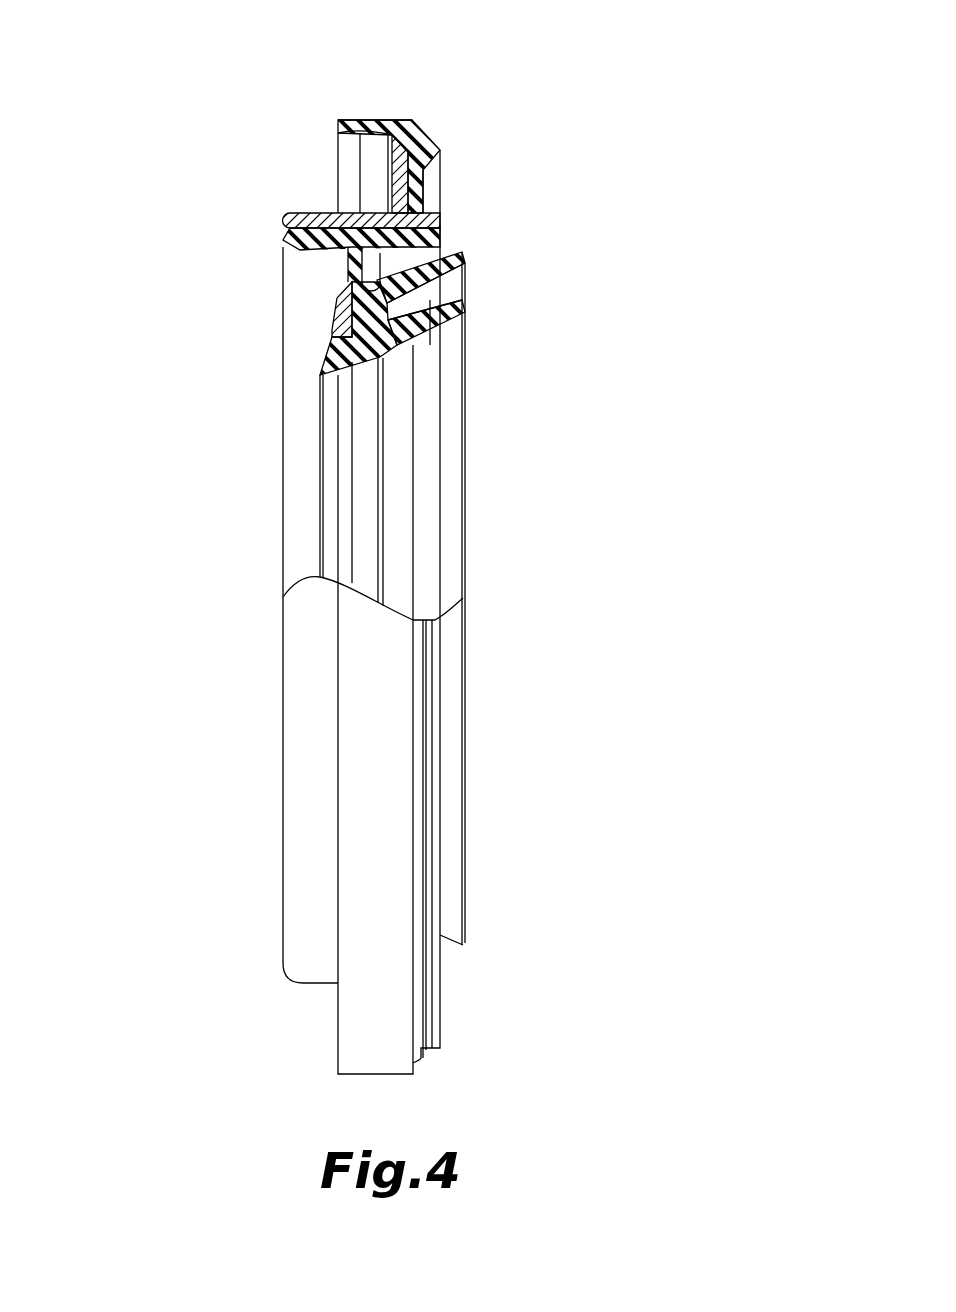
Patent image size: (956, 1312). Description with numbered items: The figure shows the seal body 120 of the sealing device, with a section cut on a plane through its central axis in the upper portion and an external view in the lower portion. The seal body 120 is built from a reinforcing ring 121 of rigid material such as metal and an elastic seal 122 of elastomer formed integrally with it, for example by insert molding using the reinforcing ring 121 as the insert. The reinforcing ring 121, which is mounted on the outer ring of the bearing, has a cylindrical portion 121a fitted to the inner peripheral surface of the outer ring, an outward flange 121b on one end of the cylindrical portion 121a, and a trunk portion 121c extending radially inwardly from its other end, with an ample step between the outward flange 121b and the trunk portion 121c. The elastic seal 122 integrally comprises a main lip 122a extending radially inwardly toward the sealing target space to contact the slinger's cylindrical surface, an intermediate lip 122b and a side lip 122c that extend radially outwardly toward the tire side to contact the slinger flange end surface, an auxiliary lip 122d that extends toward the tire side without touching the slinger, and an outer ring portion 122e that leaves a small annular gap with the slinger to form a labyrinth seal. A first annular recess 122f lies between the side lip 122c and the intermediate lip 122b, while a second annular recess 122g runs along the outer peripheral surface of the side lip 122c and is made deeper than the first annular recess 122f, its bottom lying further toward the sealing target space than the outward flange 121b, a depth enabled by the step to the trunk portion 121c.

The seal body 120 is at (532, 110).
The reinforcing ring 121 is at (273, 282).
The cylindrical portion 121a is at (318, 212).
The outward flange 121b is at (392, 173).
The trunk portion 121c is at (337, 313).
The elastic seal 122 is at (468, 177).
The main lip 122a is at (323, 372).
The intermediate lip 122b is at (437, 323).
The side lip 122c is at (465, 273).
The auxiliary lip 122d is at (440, 148).
The outer ring portion 122e is at (372, 120).
The first annular recess 122f is at (445, 296).
The second annular recess 122g is at (465, 261).